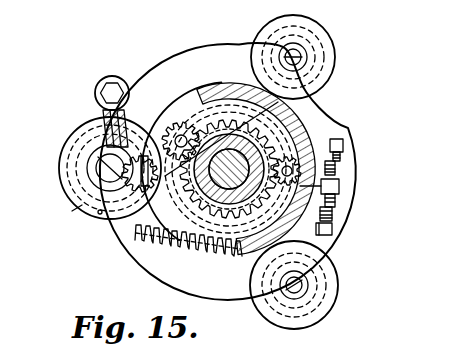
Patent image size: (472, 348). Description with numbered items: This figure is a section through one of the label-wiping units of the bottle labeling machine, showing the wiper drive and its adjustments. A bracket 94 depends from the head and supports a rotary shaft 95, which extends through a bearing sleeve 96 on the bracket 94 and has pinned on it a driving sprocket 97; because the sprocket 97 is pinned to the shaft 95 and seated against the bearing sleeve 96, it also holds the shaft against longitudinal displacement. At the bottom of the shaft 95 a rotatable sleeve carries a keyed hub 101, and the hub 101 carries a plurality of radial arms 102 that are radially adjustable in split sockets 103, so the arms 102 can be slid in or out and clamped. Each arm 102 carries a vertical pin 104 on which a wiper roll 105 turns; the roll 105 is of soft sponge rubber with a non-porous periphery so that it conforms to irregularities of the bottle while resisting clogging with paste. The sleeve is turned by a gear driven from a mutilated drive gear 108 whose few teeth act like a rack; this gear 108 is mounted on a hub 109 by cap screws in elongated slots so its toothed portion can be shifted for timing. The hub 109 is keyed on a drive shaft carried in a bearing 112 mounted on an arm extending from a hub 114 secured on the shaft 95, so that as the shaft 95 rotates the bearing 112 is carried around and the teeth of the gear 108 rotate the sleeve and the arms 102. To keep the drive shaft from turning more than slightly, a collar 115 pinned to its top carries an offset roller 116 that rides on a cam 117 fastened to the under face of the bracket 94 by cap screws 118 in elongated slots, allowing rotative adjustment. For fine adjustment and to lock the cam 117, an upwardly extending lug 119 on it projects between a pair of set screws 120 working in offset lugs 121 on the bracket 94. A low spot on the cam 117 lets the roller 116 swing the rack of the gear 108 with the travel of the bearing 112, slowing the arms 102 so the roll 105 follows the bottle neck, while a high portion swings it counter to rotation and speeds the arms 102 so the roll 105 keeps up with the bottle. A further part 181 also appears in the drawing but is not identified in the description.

The bracket 94 is at (232, 103).
The rotary shaft 95 is at (222, 158).
The bearing sleeve 96 is at (231, 150).
The driving sprocket 97 is at (196, 87).
The hub 101 is at (331, 100).
The radial arms 102 is at (358, 269).
The split sockets 103 is at (222, 152).
The vertical pin 104 is at (297, 57).
The wiper roll 105 is at (80, 140).
The mutilated drive gear 108 is at (72, 211).
The hub 109 is at (100, 214).
The bearing 112 is at (90, 157).
The hub 114 is at (190, 247).
The collar 115 is at (105, 131).
The offset roller 116 is at (112, 77).
The cam 117 is at (280, 127).
The cap screws 118 is at (213, 50).
The lug 119 is at (340, 186).
The set screws 120 is at (262, 133).
The offset lugs 121 is at (338, 178).
The lock nut 181 is at (368, 137).